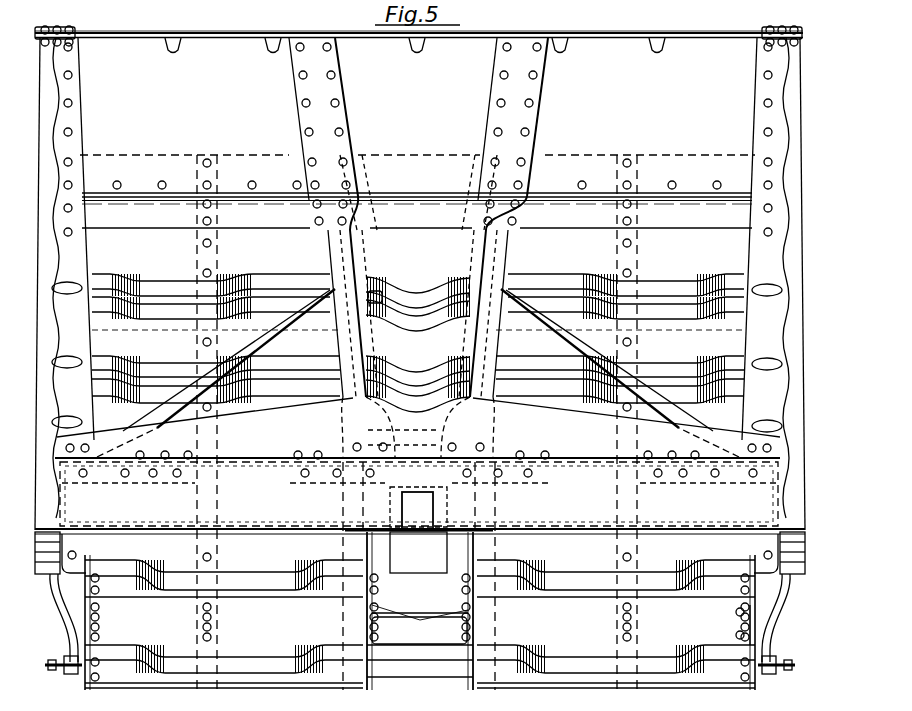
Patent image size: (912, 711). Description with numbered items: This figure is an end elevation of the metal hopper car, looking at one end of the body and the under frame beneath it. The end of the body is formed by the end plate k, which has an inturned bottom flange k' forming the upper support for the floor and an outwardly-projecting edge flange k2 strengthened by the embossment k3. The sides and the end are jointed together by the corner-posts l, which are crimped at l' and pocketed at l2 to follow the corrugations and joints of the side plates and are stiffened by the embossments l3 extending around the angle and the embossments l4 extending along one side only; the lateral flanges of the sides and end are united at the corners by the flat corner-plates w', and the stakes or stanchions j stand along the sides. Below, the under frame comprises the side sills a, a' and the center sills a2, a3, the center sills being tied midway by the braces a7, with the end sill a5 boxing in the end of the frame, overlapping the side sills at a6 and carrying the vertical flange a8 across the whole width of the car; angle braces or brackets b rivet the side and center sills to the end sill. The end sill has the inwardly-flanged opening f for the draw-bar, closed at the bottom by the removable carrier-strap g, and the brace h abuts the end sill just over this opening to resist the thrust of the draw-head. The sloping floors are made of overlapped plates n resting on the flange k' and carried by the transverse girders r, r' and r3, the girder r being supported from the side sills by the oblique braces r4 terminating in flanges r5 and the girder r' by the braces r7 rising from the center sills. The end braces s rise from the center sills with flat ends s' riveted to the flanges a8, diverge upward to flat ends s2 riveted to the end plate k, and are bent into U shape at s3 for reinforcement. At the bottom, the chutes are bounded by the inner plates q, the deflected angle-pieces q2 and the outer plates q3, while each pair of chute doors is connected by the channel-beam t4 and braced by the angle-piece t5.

The corner-plate w' is at (424, 24).
The edge flange k2 is at (485, 34).
The embossment k3 is at (566, 50).
The end plate k is at (418, 134).
The inturned bottom flange k' is at (418, 448).
The stake j is at (40, 338).
The corner-post l is at (440, 239).
The crimp l' is at (437, 278).
The pocket l2 is at (785, 196).
The embossment l3 is at (782, 290).
The embossment l4 is at (790, 62).
The floor-plate n is at (417, 422).
The flat end of brace s2 is at (303, 124).
The U-shaped bend s3 is at (418, 313).
The end brace s is at (418, 285).
The flat end of brace s' is at (404, 428).
The transverse girder r is at (418, 291).
The transverse girder r' is at (418, 373).
The brace flange r5 is at (378, 292).
The girder brace r4 is at (285, 346).
The girder brace r7 is at (380, 385).
The transverse girder r3 is at (235, 575).
The vertical flange a8 is at (417, 441).
The end sill a5 is at (420, 498).
The end sill overlap a6 is at (785, 500).
The angle brace b is at (419, 492).
The draw-bar brace h is at (424, 492).
The draw-bar opening f is at (417, 511).
The carrier-strap g is at (421, 534).
The side sill a is at (54, 624).
The side sill a' is at (792, 624).
The center sill a2 is at (386, 575).
The center sill a3 is at (455, 575).
The center-sill brace a7 is at (432, 566).
The chute side plate q is at (444, 637).
The angle-piece q2 is at (735, 628).
The outer chute plate q3 is at (85, 551).
The door angle-piece t5 is at (376, 648).
The door channel-beam t4 is at (414, 670).